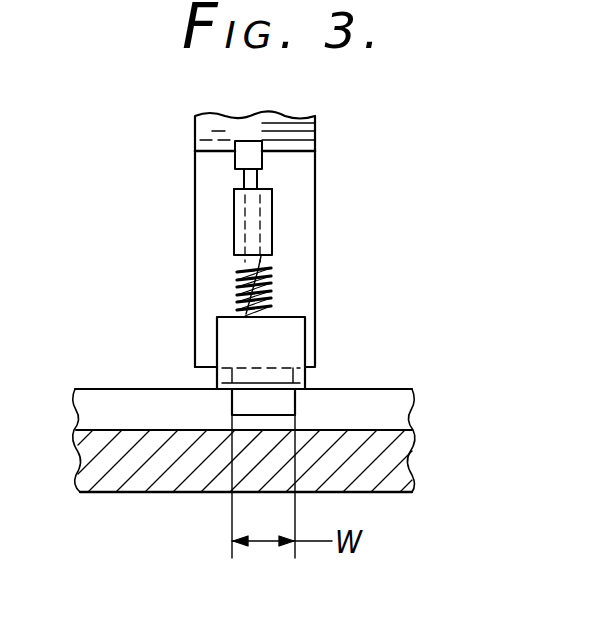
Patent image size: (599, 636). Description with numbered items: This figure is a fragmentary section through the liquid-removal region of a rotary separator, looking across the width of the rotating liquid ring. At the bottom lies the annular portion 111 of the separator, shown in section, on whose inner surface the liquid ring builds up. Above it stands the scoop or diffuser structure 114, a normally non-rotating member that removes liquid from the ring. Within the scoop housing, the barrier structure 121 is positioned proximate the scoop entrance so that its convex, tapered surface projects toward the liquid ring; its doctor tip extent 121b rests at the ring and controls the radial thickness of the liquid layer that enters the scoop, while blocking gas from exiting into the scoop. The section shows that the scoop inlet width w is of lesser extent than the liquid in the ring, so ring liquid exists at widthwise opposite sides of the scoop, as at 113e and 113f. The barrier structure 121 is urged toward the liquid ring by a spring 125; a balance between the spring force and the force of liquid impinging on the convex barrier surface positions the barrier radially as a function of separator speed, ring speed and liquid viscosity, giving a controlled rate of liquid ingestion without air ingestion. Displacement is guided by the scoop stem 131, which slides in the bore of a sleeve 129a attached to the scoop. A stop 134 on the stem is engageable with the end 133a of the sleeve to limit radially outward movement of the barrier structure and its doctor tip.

The annular portion 111 is at (117, 480).
The ring liquid at one widthwise side of the scoop 113e is at (162, 408).
The ring liquid at the other widthwise side of the scoop 113f is at (368, 398).
The scoop or diffuser structure 114 is at (188, 237).
The barrier structure 121 is at (278, 335).
The doctor tip extent 121b is at (226, 389).
The spring 125 is at (277, 277).
The sleeve 129a is at (275, 225).
The scoop stem 131 is at (254, 180).
The end of the sleeve 133a is at (241, 188).
The stop 134 is at (253, 142).